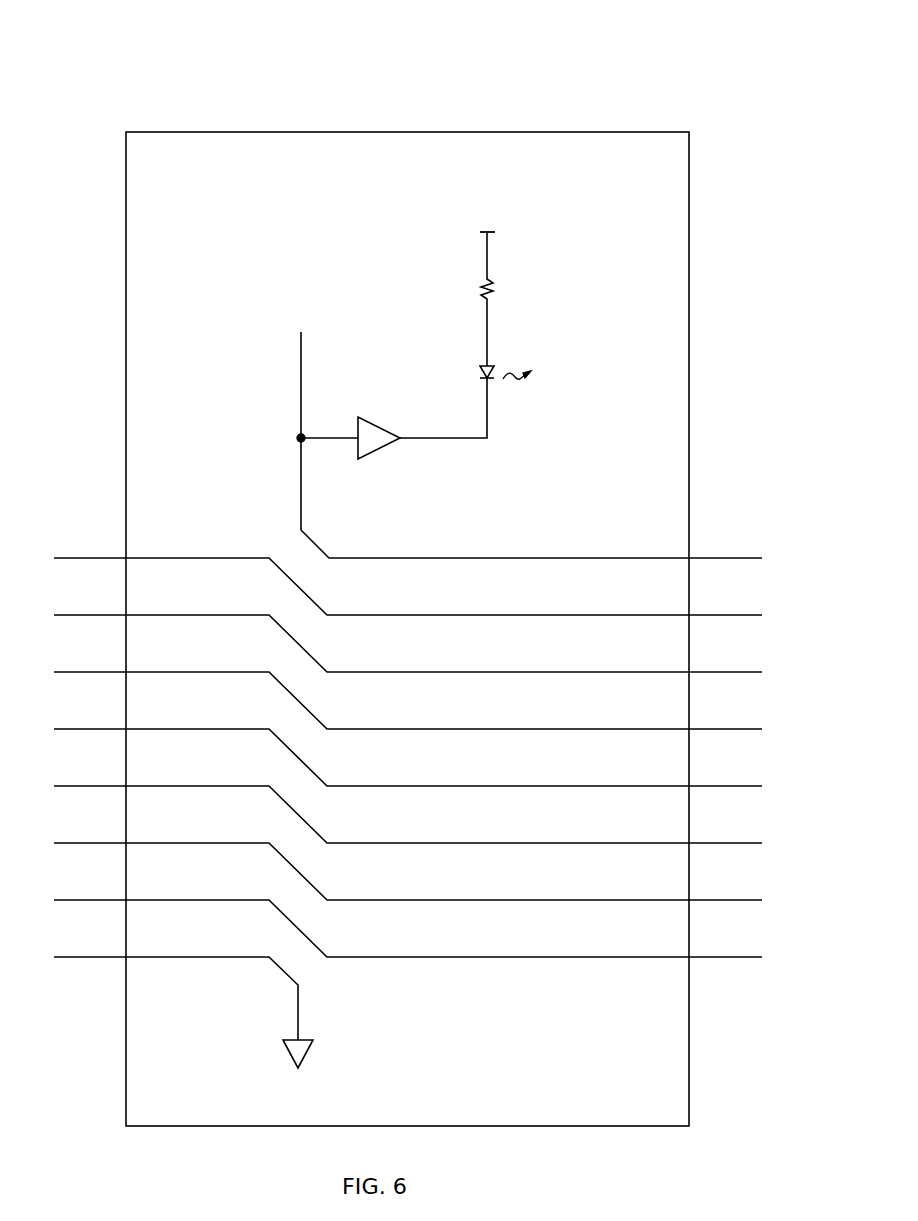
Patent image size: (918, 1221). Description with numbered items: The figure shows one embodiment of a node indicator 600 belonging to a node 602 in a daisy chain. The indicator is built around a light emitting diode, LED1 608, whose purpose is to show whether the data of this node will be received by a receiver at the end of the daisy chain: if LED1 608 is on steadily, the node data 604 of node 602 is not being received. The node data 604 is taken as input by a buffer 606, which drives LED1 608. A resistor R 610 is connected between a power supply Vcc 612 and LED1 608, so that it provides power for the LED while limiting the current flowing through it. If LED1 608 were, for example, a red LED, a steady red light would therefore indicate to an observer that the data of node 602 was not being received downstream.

The node indicator 600 is at (719, 45).
The node 602 is at (407, 629).
The node data 604 is at (502, 420).
The buffer 606 is at (394, 434).
The light emitting diode LED1 608 is at (564, 341).
The resistor R 610 is at (536, 267).
The power supply Vcc 612 is at (515, 215).